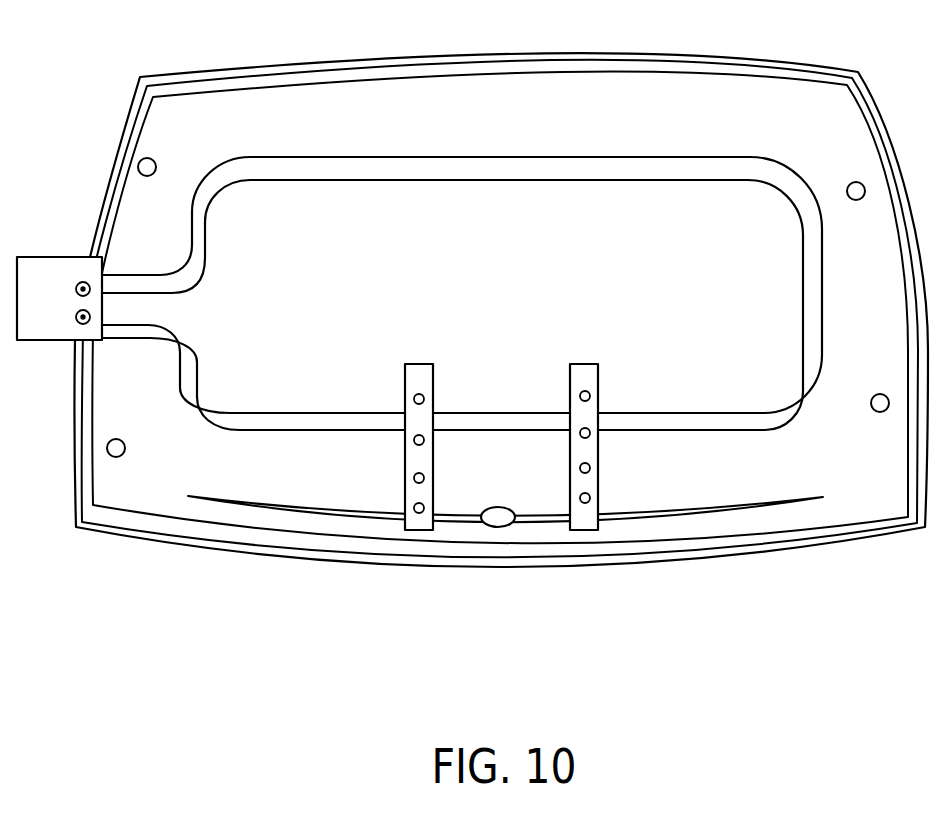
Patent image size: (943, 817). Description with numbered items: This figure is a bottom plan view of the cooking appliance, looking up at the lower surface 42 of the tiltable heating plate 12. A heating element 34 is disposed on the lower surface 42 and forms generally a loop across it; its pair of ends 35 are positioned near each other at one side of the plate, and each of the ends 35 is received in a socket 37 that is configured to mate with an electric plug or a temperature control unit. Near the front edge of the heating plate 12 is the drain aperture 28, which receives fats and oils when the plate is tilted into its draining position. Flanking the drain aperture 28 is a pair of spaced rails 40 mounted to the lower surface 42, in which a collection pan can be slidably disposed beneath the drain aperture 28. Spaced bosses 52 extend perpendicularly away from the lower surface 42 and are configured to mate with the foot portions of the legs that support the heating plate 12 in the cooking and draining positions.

The heating plate 12 is at (613, 107).
The lower surface 42 is at (440, 97).
The heating element 34 is at (278, 165).
The ends 35 is at (112, 280).
The socket 37 is at (46, 341).
The spaced rails 40 is at (420, 522).
The drain aperture 28 is at (498, 530).
The spaced bosses 52 is at (872, 412).